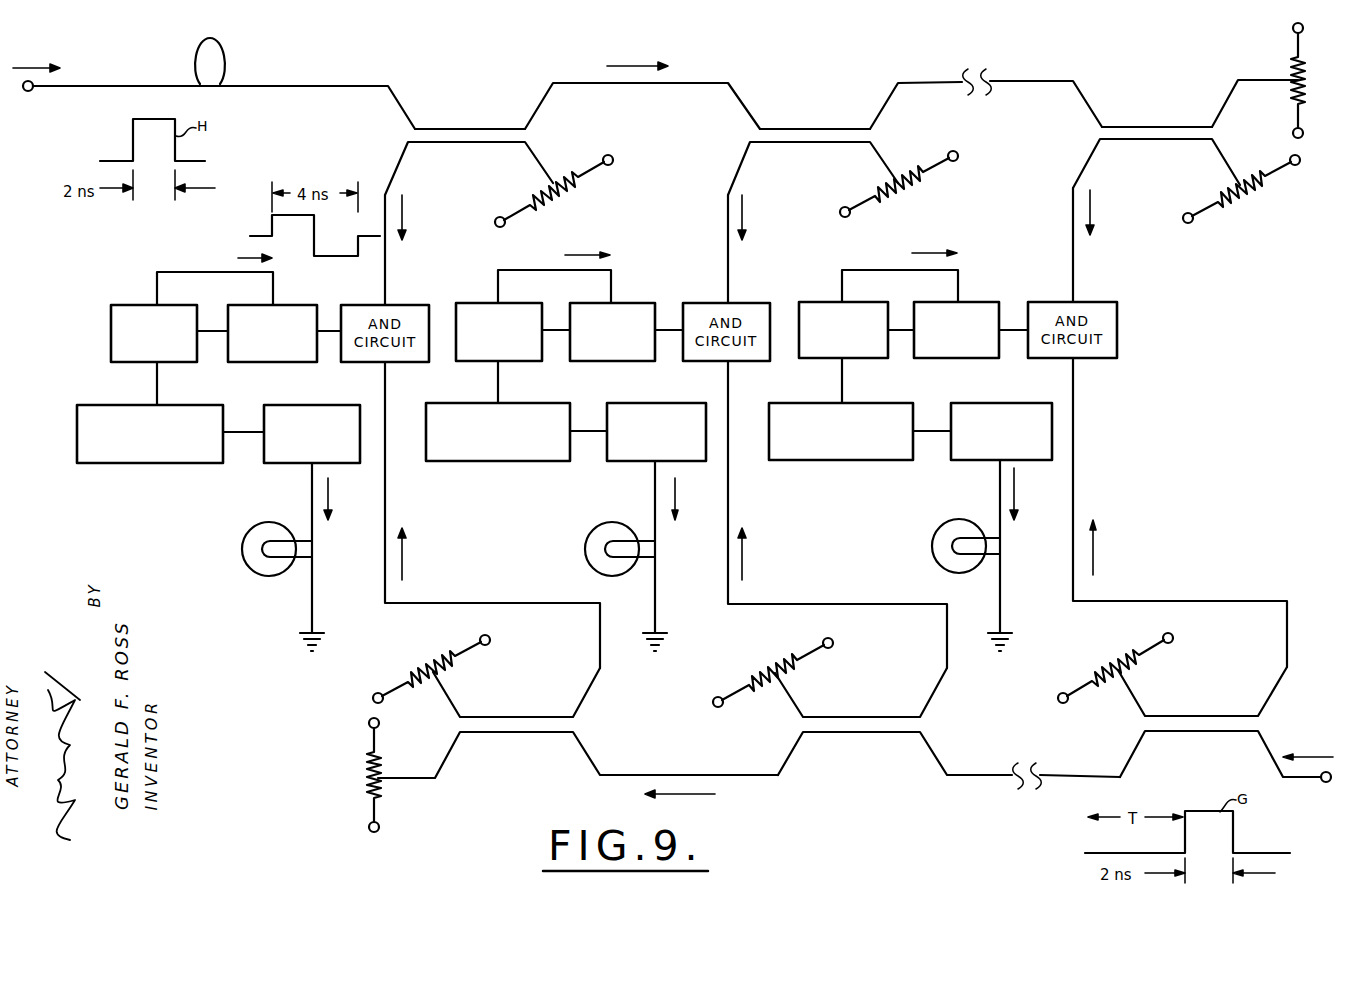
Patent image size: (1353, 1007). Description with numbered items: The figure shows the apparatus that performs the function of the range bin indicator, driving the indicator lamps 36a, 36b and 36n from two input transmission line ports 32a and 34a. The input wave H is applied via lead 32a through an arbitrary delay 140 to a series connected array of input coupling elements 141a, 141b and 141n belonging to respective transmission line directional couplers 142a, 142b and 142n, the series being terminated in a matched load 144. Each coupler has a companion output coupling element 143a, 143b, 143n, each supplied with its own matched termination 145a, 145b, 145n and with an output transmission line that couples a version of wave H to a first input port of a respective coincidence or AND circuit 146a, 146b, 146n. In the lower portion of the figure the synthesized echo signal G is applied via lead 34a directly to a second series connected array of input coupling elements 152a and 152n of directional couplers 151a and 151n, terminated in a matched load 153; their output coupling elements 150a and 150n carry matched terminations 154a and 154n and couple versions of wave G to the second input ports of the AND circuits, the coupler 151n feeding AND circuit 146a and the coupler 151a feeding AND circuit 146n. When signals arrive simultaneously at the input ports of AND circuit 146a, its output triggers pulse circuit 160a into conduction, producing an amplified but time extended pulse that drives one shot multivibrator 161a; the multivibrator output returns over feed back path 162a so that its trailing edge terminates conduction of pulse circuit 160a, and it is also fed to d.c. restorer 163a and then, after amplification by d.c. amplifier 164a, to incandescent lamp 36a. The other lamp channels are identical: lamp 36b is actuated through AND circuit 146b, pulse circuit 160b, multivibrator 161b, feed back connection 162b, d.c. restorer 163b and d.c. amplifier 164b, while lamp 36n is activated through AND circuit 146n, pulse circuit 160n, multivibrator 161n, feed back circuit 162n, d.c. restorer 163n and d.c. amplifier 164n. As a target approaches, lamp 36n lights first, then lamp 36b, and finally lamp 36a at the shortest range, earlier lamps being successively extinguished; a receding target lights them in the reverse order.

The input transmission line port 32a is at (30, 92).
The input transmission line port 34a is at (1324, 783).
The indicator lamp 36a is at (242, 556).
The indicator lamp 36b is at (587, 556).
The indicator lamp 36n is at (932, 554).
The arbitrary delay 140 is at (224, 50).
The input coupling element 141a is at (512, 127).
The input coupling element 141b is at (855, 126).
The input coupling element 141n is at (1192, 126).
The transmission line directional coupler 142a is at (439, 146).
The transmission line directional coupler 142b is at (780, 144).
The transmission line directional coupler 142n is at (1128, 142).
The output coupling element 143a is at (386, 132).
The output coupling element 143b is at (724, 132).
The output coupling element 143n is at (1193, 139).
The matched load 144 is at (1290, 69).
The matched termination 145a is at (566, 194).
The matched termination 145b is at (911, 196).
The matched termination 145n is at (1256, 196).
The AND circuit 146a is at (410, 303).
The AND circuit 146b is at (750, 303).
The AND circuit 146n is at (1098, 302).
The output coupling element 150n is at (508, 717).
The output coupling element 150a is at (1196, 716).
The transmission line directional coupler 151n is at (578, 725).
The transmission line directional coupler 151a is at (1189, 724).
The input coupling element 152n is at (447, 724).
The input coupling element 152a is at (1112, 724).
The matched load 153 is at (372, 778).
The matched termination 154n is at (457, 657).
The matched termination 154a is at (1153, 647).
The pulse circuit 160a is at (260, 362).
The pulse circuit 160b is at (612, 361).
The pulse circuit 160n is at (957, 359).
The one shot multivibrator 161a is at (179, 305).
The one shot multivibrator 161b is at (514, 301).
The one shot multivibrator 161n is at (859, 301).
The feed back path 162a is at (186, 272).
The feed back connection 162b is at (529, 270).
The feed back circuit 162n is at (874, 270).
The d.c. restorer 163a is at (140, 465).
The d.c. restorer 163b is at (493, 463).
The d.c. restorer 163n is at (838, 462).
The d.c. amplifier 164a is at (276, 465).
The d.c. amplifier 164b is at (618, 463).
The d.c. amplifier 164n is at (960, 462).